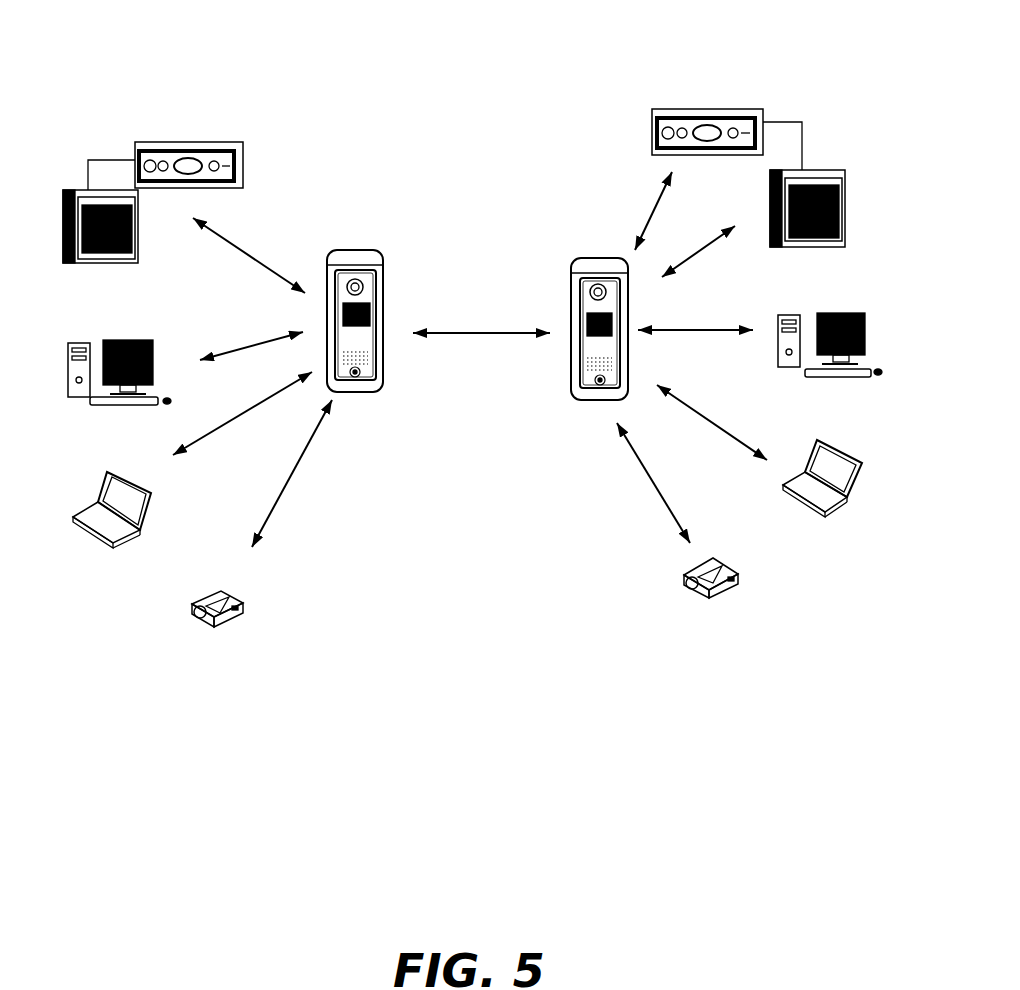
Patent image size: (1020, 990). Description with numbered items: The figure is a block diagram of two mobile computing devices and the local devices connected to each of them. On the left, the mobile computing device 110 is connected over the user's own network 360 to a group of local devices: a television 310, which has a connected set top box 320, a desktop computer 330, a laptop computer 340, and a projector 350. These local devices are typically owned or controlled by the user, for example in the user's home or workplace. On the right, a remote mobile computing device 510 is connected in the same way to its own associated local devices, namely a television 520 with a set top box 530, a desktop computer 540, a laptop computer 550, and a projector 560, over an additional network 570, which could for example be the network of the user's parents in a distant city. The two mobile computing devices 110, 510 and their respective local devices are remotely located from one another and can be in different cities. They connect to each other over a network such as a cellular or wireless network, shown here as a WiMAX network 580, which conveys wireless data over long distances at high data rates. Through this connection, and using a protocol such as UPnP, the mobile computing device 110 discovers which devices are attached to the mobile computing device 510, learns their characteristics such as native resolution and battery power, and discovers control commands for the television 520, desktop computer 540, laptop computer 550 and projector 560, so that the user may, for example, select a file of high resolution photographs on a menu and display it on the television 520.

The mobile computing device 110 is at (348, 252).
The television 310 is at (63, 198).
The set top box 320 is at (208, 142).
The desktop computer 330 is at (107, 343).
The laptop computer 340 is at (107, 472).
The projector 350 is at (178, 608).
The network 360 is at (252, 382).
The remote mobile computing device 510 is at (598, 270).
The television 520 is at (817, 175).
The set top box 530 is at (676, 108).
The desktop computer 540 is at (818, 350).
The laptop computer 550 is at (818, 503).
The projector 560 is at (723, 590).
The network 570 is at (692, 357).
The WiMAX network 580 is at (481, 357).